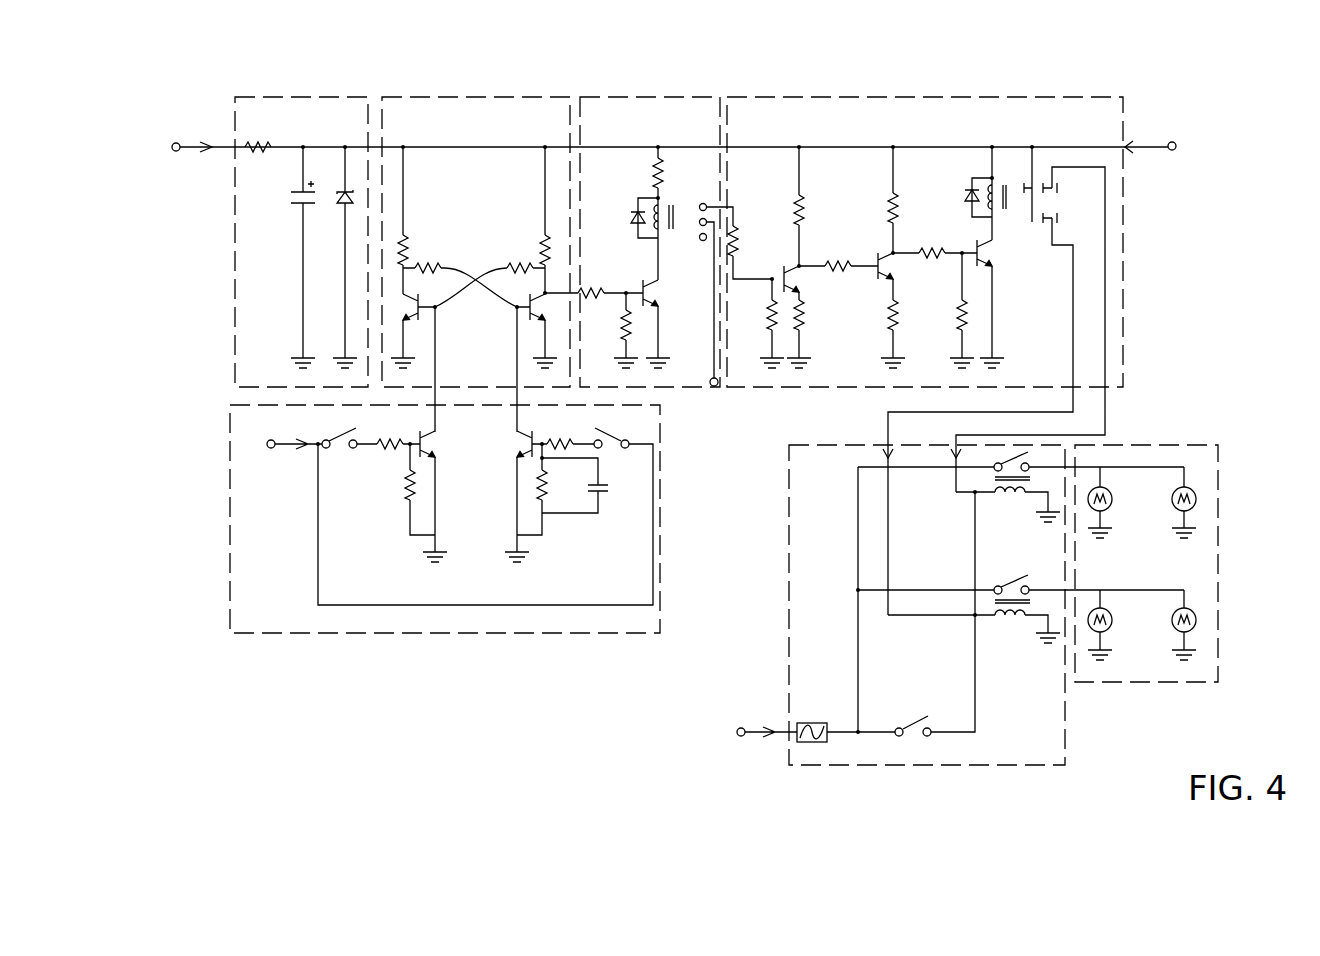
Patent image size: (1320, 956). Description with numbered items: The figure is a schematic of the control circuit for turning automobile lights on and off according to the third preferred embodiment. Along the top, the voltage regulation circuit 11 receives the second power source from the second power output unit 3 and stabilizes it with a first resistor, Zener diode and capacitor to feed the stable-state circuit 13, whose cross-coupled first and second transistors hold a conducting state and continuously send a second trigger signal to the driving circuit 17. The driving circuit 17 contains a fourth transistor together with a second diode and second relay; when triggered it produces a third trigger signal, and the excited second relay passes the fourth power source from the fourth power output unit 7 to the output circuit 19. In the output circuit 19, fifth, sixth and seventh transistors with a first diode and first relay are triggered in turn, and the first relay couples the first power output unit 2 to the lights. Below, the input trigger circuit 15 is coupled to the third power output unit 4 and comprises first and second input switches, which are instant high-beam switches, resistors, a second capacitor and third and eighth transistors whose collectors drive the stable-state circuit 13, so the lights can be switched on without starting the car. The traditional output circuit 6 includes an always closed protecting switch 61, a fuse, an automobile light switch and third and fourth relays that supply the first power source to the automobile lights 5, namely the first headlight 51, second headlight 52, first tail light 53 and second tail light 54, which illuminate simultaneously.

The first power output unit 2 is at (1178, 150).
The second power output unit 3 is at (172, 152).
The third power output unit 4 is at (268, 445).
The automobile lights 5 is at (1188, 563).
The traditional output circuit 6 is at (947, 638).
The fourth power output unit 7 is at (713, 388).
The voltage regulation circuit 11 is at (344, 96).
The stable-state circuit 13 is at (532, 96).
The input trigger circuit 15 is at (251, 428).
The driving circuit 17 is at (692, 96).
The output circuit 19 is at (859, 96).
The first headlight 51 is at (1112, 499).
The second headlight 52 is at (1112, 620).
The first tail light 53 is at (1196, 499).
The second tail light 54 is at (1196, 620).
The always closed protecting switch 61 is at (808, 743).